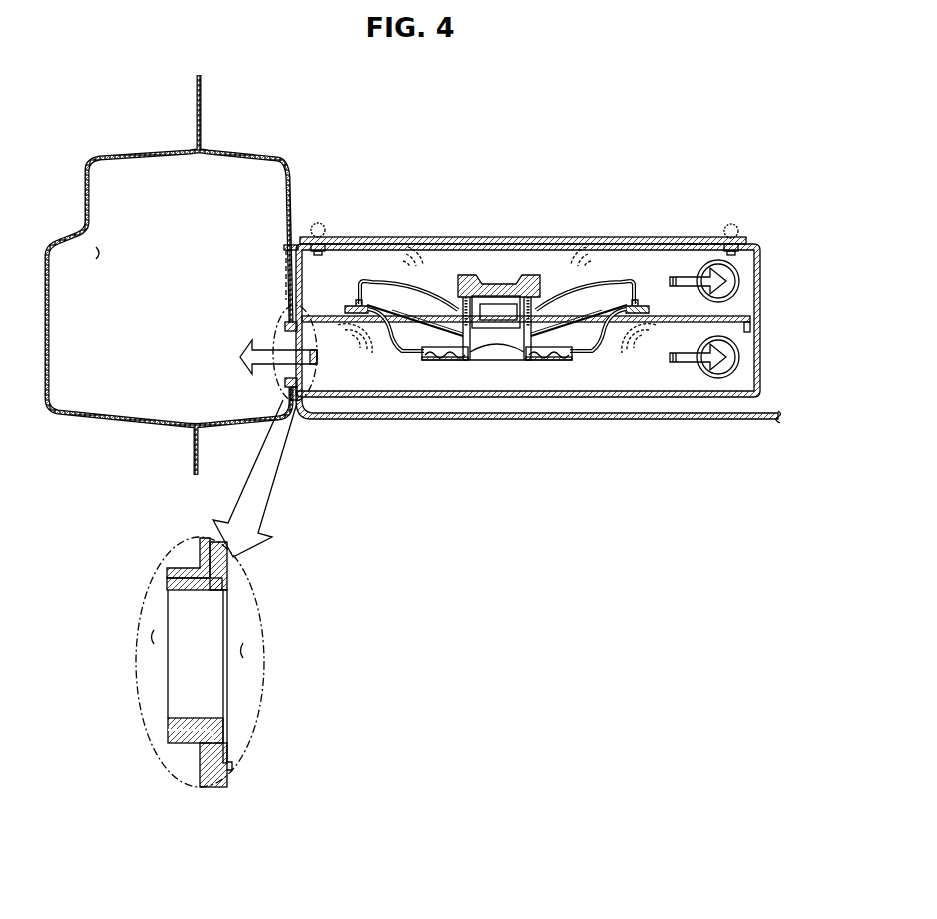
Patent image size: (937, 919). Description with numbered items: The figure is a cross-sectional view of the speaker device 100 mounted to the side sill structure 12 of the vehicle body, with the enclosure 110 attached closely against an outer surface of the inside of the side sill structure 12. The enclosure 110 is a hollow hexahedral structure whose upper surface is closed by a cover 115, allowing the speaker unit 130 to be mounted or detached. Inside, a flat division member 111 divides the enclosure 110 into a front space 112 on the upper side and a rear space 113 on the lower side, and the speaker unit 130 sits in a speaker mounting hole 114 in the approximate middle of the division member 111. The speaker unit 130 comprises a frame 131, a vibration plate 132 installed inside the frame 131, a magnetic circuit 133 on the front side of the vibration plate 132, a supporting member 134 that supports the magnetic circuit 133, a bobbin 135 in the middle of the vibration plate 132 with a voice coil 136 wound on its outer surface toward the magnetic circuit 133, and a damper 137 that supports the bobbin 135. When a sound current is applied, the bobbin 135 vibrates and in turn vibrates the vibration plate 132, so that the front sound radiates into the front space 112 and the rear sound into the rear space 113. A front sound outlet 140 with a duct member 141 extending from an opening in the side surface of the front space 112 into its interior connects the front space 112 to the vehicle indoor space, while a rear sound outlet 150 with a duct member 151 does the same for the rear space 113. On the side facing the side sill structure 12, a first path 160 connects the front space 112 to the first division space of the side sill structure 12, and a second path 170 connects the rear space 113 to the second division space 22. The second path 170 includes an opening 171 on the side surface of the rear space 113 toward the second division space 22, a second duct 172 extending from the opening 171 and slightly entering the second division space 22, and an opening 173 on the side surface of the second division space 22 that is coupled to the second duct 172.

The side sill structure 12 is at (130, 151).
The second division space 22 is at (84, 233).
The speaker device 100 is at (607, 158).
The enclosure 110 is at (766, 261).
The division member 111 is at (746, 318).
The front space 112 is at (640, 252).
The rear space 113 is at (670, 420).
The speaker mounting hole 114 is at (357, 362).
The cover 115 is at (697, 238).
The speaker unit 130 is at (434, 285).
The frame 131 is at (404, 356).
The vibration plate 132 is at (567, 345).
The magnetic circuit 133 is at (501, 274).
The supporting member 134 is at (380, 282).
The bobbin 135 is at (529, 362).
The voice coil 136 is at (538, 296).
The damper 137 is at (450, 362).
The front sound outlet 140 is at (745, 258).
The duct member 141 is at (743, 291).
The rear sound outlet 150 is at (750, 375).
The duct member 151 is at (743, 343).
The first path 160 is at (279, 248).
The second path 170 is at (280, 329).
The opening 171 is at (226, 716).
The second duct 172 is at (168, 723).
The opening 173 is at (176, 590).